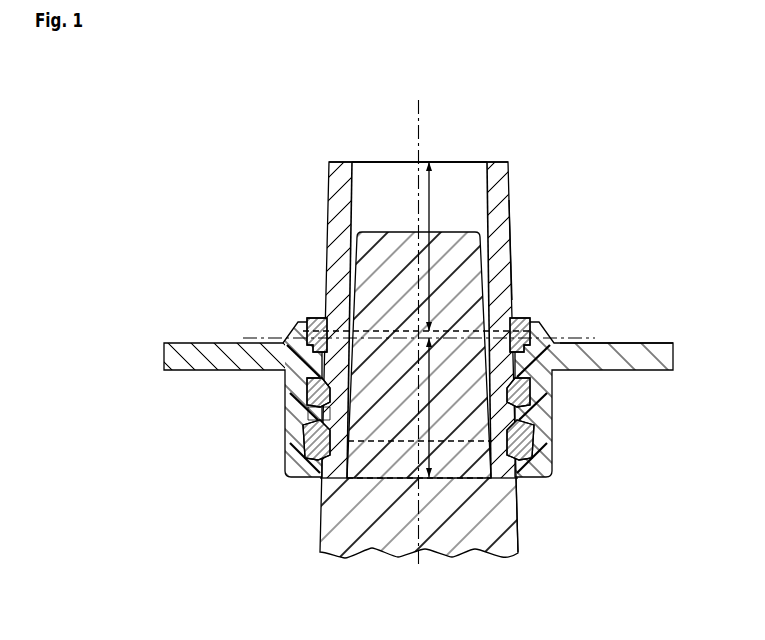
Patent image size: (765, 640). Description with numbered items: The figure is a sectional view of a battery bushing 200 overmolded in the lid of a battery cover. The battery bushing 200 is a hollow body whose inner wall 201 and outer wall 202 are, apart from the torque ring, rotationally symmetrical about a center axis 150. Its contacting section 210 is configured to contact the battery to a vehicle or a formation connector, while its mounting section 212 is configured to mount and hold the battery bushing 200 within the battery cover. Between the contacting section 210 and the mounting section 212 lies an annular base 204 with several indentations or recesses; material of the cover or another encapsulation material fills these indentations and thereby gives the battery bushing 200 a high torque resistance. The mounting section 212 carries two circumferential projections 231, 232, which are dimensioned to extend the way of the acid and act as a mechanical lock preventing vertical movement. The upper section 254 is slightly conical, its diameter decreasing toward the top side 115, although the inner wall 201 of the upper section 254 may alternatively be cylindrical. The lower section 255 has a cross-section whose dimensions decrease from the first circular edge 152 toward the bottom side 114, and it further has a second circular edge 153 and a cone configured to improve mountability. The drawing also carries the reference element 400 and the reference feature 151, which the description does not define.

The center axis 150 is at (418, 114).
The upper section 254 is at (430, 198).
The top side 115 is at (489, 162).
The battery bushing 200 is at (530, 158).
The inner element (insert) in sleeve 400 is at (382, 232).
The outer wall 202 is at (522, 210).
The contacting section 210 is at (515, 242).
The annular base 204 is at (515, 317).
The top surface of wall 151 is at (583, 341).
The first circular edge 152 is at (322, 313).
The circumferential projection 231 is at (303, 388).
The lower section 255 is at (320, 427).
The circumferential projection 232 is at (301, 444).
The mounting section 212 is at (516, 408).
The second circular edge 153 is at (376, 441).
The inner wall 201 is at (492, 412).
The bottom side 114 is at (498, 450).